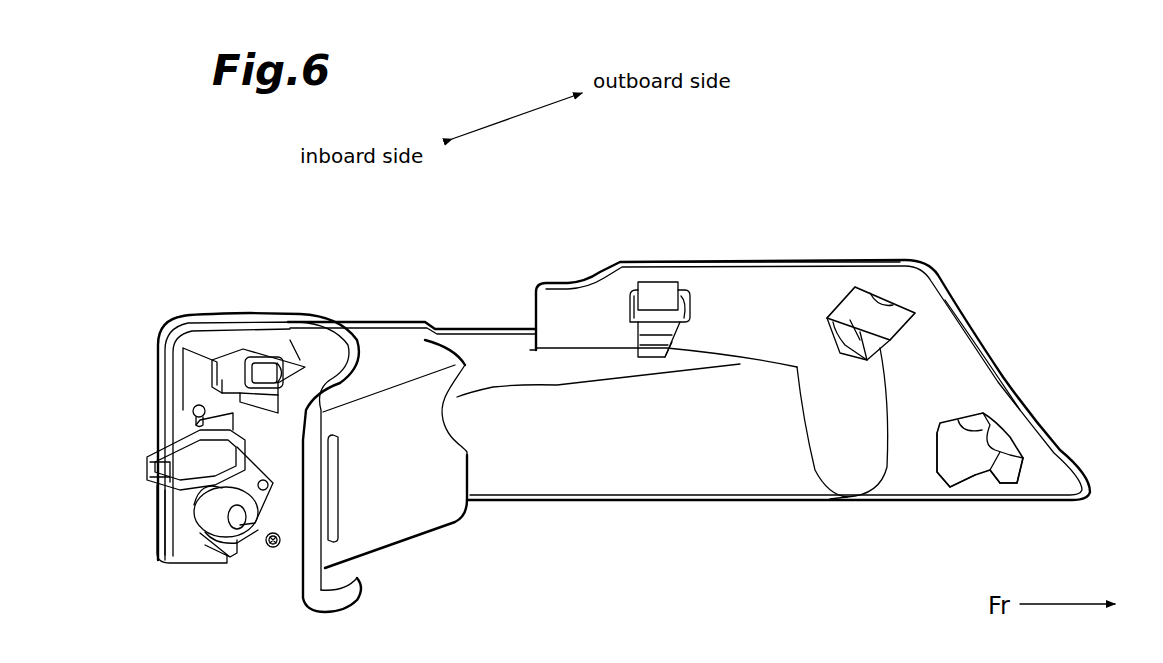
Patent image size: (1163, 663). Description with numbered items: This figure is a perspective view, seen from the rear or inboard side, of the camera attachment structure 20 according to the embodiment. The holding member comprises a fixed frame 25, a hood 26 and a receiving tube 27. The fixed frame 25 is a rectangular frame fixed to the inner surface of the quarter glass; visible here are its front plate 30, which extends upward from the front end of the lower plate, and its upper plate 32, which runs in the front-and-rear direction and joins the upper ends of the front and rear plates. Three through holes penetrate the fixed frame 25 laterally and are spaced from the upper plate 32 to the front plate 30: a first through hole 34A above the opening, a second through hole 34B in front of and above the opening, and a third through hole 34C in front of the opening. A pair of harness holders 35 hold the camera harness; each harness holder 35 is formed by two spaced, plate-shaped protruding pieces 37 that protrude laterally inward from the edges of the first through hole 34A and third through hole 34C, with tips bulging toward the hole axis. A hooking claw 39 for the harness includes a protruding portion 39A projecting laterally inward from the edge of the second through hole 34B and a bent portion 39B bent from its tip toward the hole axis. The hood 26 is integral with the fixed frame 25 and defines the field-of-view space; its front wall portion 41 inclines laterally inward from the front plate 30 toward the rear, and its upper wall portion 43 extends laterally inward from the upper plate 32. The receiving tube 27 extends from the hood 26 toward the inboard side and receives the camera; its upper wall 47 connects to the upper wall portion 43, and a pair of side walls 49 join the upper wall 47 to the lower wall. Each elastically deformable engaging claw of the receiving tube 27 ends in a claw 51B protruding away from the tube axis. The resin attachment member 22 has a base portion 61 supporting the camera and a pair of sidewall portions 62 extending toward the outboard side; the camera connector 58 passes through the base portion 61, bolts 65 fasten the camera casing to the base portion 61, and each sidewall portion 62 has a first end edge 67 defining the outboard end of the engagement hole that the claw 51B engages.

The door handle assembly 20 is at (887, 168).
The attachment member 22 is at (150, 427).
The fixed frame 25 is at (630, 253).
The hood 26 is at (553, 341).
The receiving tube 27 is at (402, 333).
The front plate 30 is at (942, 352).
The upper plate 32 is at (776, 290).
The first through hole 34A is at (688, 292).
The second through hole 34B is at (903, 305).
The third through hole 34C is at (996, 428).
The harness holder 35 is at (675, 355).
The protruding piece 37 is at (660, 292).
The hooking claw 39 is at (912, 576).
The protruding portion 39A is at (807, 500).
The bent portion 39B is at (882, 500).
The front wall portion 41 is at (543, 487).
The upper wall portion 43 is at (497, 362).
The upper wall 47 is at (370, 352).
The side wall 49 is at (397, 527).
The claw 51B is at (258, 357).
The connector 58 is at (167, 505).
The base portion 61 is at (293, 468).
The sidewall portion 62 is at (210, 340).
The bolt 65 is at (197, 411).
The first end edge 67 is at (290, 362).